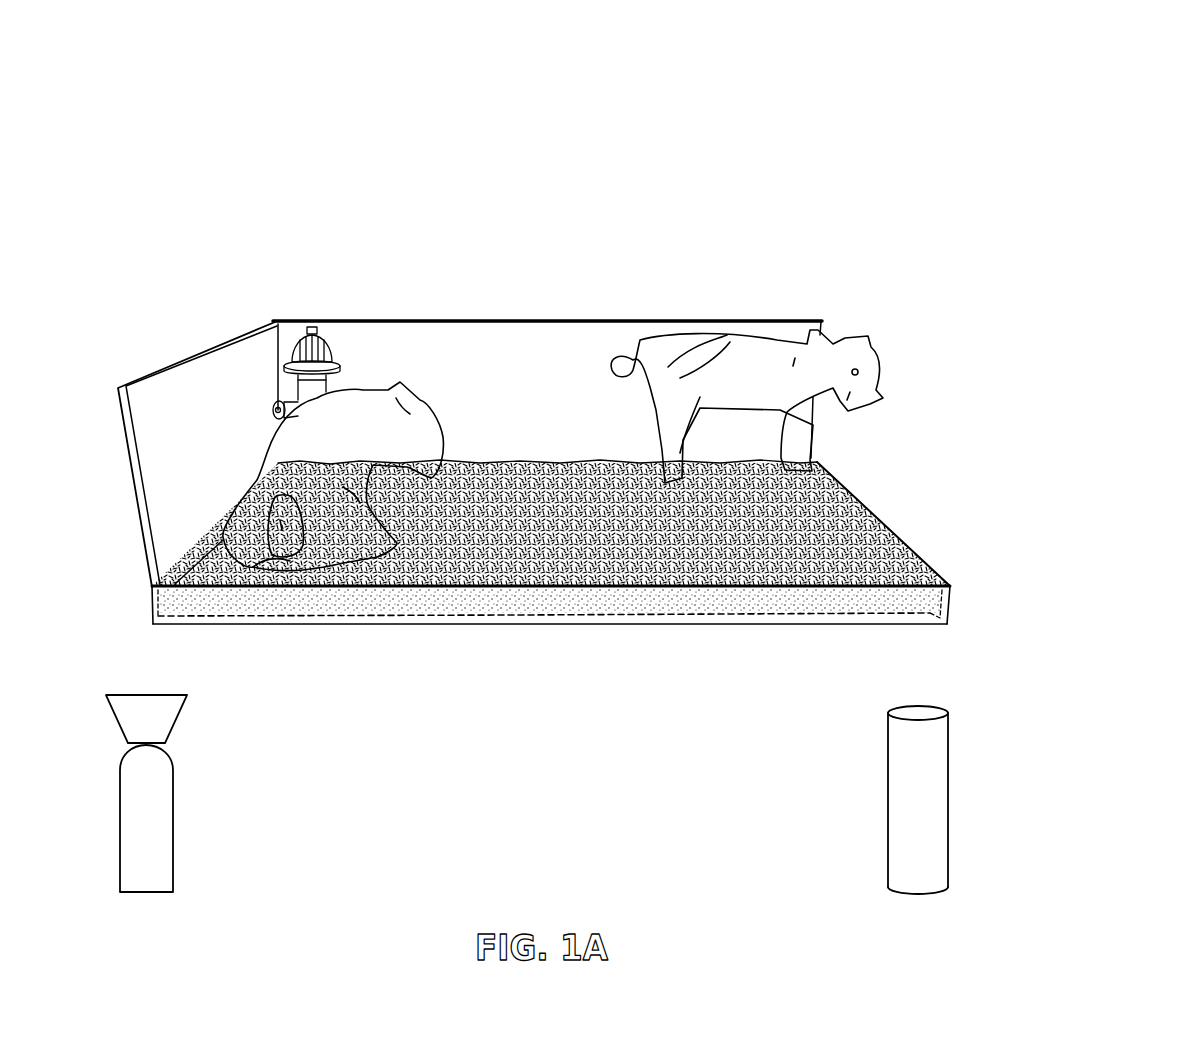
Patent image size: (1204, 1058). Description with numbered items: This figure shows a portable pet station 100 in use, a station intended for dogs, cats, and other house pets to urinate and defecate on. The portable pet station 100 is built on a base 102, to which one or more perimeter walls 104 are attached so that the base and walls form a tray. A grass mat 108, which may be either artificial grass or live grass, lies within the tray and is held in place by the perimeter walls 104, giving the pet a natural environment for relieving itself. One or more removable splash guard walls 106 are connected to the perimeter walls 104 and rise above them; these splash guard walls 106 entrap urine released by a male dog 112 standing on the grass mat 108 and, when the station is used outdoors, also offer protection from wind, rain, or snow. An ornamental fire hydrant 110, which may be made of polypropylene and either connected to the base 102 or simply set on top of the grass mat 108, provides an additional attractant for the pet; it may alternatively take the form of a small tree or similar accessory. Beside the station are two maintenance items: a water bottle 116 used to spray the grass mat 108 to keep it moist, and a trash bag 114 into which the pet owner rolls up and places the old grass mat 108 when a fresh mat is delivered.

The portable pet station 100 is at (1096, 86).
The base 102 is at (687, 617).
The perimeter walls 104 is at (950, 600).
The removable splash guard walls 106 is at (497, 345).
The grass mat 108 is at (512, 562).
The ornamental fire hydrant 110 is at (332, 350).
The male dog 112 is at (777, 338).
The trash bag 114 is at (950, 792).
The water bottle 116 is at (175, 823).